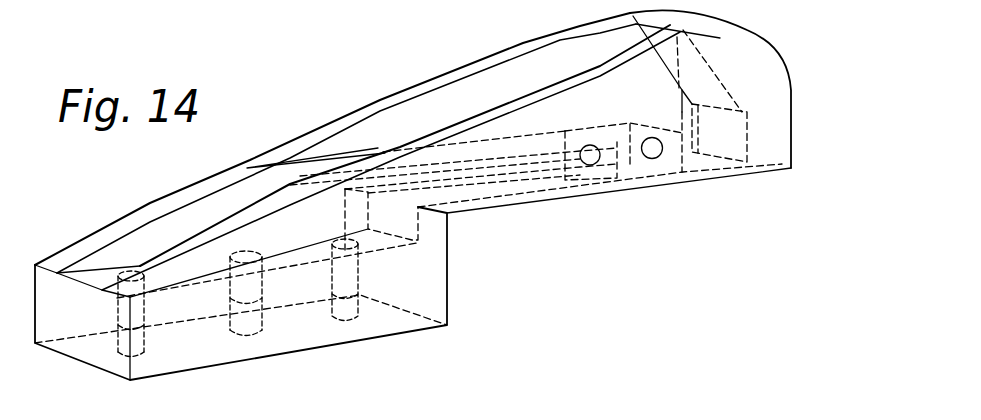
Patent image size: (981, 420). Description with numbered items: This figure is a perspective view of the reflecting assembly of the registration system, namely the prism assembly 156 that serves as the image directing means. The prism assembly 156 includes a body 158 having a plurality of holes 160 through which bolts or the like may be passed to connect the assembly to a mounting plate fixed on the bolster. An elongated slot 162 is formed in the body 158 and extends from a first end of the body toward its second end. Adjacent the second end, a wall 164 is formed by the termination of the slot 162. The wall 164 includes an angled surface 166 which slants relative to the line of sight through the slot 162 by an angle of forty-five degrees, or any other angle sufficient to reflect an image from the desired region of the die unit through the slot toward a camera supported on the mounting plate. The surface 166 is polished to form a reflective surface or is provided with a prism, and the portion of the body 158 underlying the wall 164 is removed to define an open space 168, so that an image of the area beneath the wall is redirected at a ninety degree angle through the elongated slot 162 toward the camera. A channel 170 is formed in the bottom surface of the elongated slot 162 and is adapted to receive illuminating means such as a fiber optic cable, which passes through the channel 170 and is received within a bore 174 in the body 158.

The prism assembly 156 is at (522, 45).
The body 158 is at (428, 292).
The holes 160 is at (140, 330).
The elongated slot 162 is at (330, 140).
The wall 164 is at (743, 63).
The angled surface 166 is at (645, 40).
The open space 168 is at (697, 162).
The channel 170 is at (245, 195).
The bore 174 is at (588, 168).